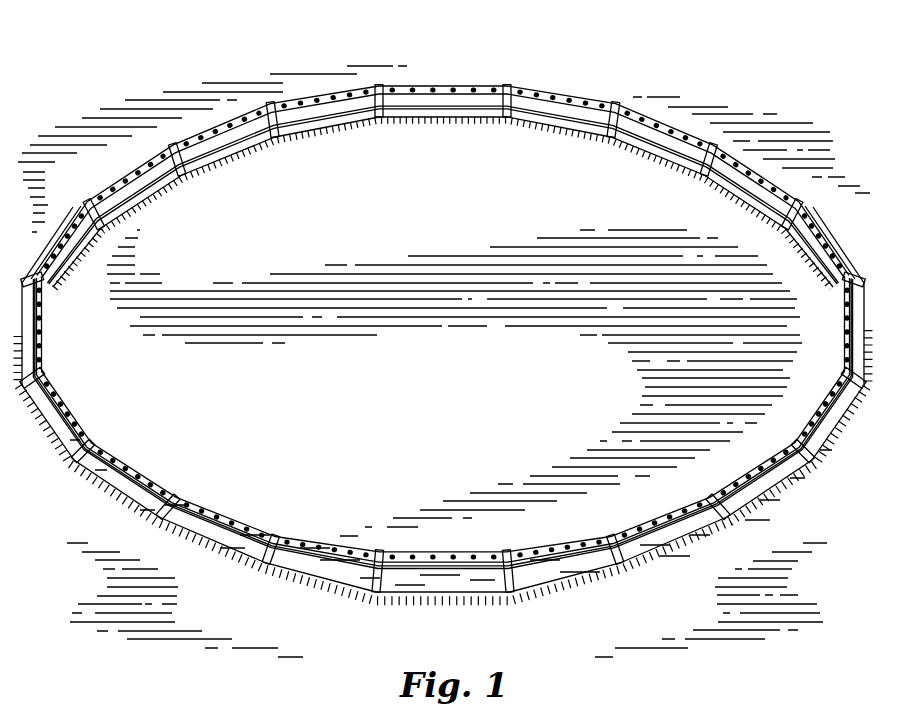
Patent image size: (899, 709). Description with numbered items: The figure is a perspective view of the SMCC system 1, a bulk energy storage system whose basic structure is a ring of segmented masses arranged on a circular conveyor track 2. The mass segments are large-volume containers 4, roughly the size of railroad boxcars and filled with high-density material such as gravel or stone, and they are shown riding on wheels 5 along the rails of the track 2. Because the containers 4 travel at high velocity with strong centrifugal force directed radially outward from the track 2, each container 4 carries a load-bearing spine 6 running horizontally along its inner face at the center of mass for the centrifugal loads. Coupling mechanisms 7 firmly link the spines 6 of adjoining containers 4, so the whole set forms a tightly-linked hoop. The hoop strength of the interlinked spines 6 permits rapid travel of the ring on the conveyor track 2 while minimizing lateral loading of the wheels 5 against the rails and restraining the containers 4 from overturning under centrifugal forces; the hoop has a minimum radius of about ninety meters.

The SMCC system 1 is at (151, 51).
The circular conveyor track 2 is at (328, 132).
The container 4 is at (564, 93).
The wheels 5 is at (515, 126).
The load-bearing spine 6 is at (207, 157).
The coupling mechanism 7 is at (590, 135).